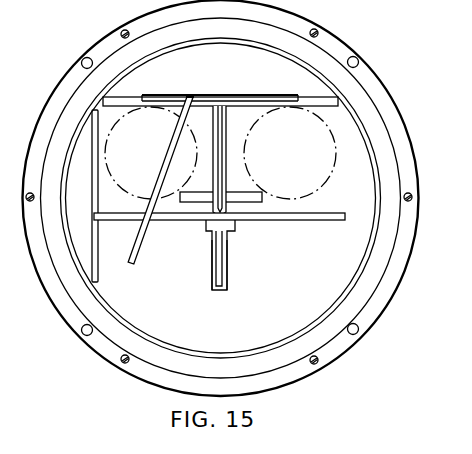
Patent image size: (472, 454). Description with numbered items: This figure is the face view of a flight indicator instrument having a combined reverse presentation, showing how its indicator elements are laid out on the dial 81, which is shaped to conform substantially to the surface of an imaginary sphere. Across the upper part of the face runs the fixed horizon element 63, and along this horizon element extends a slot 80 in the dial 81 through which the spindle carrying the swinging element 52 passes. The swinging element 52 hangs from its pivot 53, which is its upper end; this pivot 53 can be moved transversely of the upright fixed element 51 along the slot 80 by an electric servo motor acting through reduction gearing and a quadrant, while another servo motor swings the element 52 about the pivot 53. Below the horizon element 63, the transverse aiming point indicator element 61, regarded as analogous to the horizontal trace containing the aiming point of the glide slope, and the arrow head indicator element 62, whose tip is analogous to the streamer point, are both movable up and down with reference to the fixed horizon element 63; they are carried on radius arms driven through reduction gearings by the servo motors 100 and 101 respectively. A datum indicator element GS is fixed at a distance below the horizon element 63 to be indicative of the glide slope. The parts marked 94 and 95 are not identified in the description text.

The upright fixed element 51 is at (227, 277).
The swinging element 52 is at (141, 256).
The pivot 53 is at (190, 97).
The transverse aiming point indicator element 61 is at (187, 221).
The arrow head indicator element 62 is at (229, 227).
The horizon element 63 is at (307, 101).
The slot 80 is at (232, 101).
The dial 81 is at (228, 332).
The left post 94 is at (98, 234).
The inner rod 95 is at (222, 257).
The servo motor 100 is at (165, 158).
The servo motor 101 is at (305, 158).
The datum indicator element GS is at (260, 192).